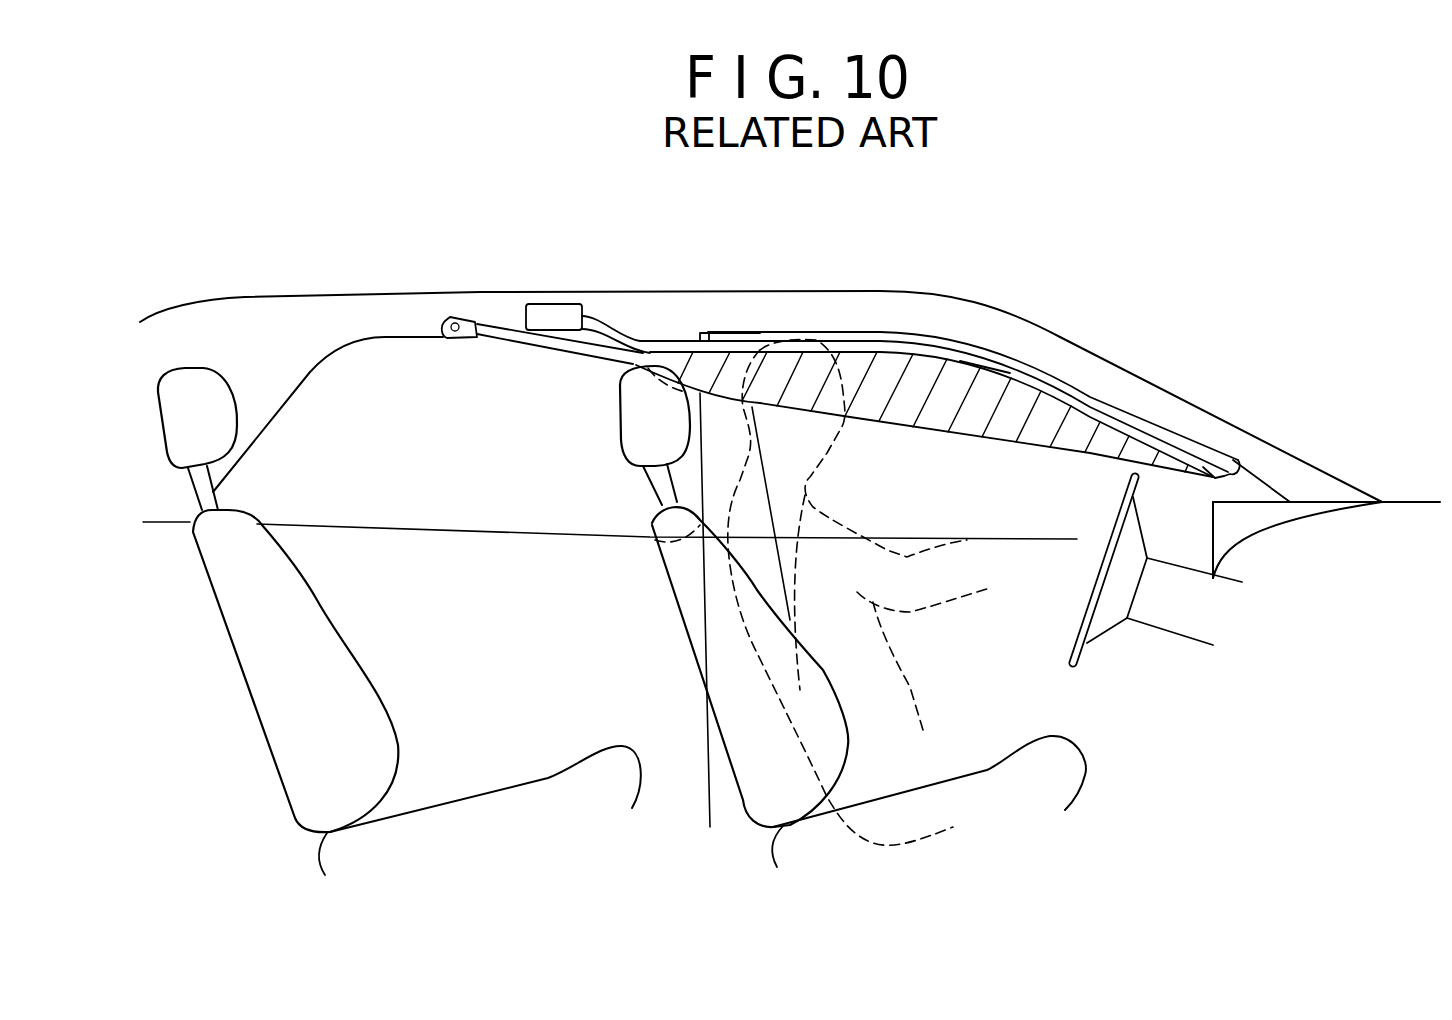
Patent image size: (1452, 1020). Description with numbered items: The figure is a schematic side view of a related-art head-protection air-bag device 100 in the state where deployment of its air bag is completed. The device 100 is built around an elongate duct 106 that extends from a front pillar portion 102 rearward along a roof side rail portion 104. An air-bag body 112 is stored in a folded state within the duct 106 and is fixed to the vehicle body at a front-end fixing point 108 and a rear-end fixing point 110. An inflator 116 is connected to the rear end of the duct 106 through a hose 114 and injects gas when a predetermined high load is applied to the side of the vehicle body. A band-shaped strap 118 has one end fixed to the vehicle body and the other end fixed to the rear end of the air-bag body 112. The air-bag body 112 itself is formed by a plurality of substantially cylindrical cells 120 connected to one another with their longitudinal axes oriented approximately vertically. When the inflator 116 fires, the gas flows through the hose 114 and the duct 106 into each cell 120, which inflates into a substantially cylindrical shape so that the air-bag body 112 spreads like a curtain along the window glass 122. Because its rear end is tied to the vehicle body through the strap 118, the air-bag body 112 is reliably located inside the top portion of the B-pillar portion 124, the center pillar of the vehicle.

The head-protection air-bag device 100 is at (1072, 312).
The front pillar portion 102 is at (1156, 400).
The roof side rail portion 104 is at (817, 307).
The duct 106 is at (690, 338).
The front-end fixing point 108 is at (1240, 458).
The rear-end fixing point 110 is at (708, 335).
The air-bag body 112 is at (985, 358).
The hose 114 is at (618, 337).
The inflator 116 is at (549, 312).
The strap 118 is at (483, 315).
The cell 120 is at (925, 357).
The window glass 122 is at (1018, 513).
The B-pillar portion 124 is at (713, 445).